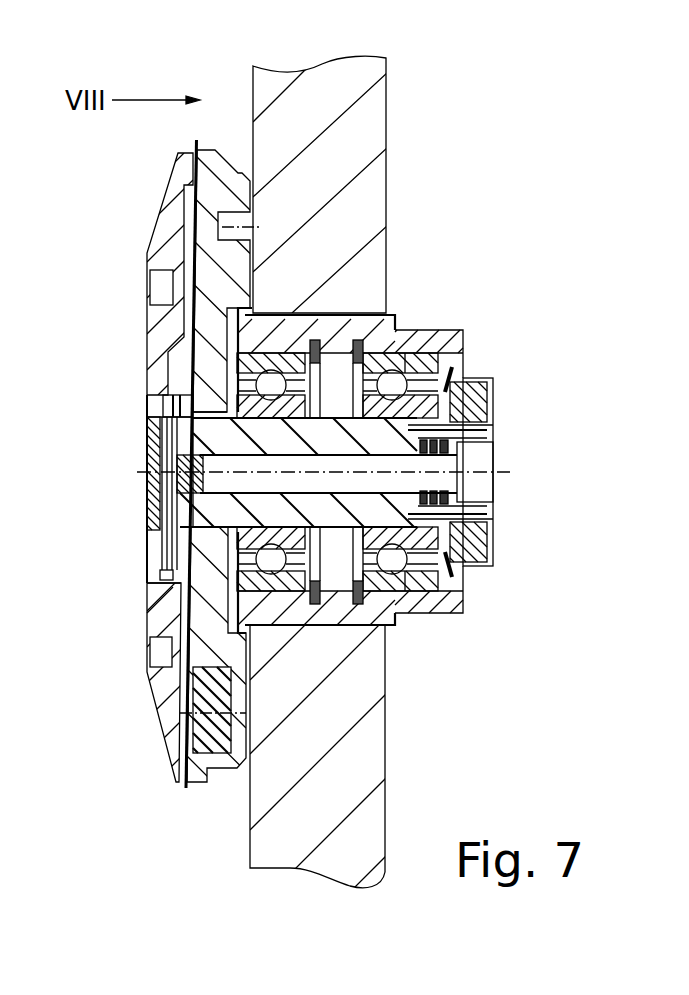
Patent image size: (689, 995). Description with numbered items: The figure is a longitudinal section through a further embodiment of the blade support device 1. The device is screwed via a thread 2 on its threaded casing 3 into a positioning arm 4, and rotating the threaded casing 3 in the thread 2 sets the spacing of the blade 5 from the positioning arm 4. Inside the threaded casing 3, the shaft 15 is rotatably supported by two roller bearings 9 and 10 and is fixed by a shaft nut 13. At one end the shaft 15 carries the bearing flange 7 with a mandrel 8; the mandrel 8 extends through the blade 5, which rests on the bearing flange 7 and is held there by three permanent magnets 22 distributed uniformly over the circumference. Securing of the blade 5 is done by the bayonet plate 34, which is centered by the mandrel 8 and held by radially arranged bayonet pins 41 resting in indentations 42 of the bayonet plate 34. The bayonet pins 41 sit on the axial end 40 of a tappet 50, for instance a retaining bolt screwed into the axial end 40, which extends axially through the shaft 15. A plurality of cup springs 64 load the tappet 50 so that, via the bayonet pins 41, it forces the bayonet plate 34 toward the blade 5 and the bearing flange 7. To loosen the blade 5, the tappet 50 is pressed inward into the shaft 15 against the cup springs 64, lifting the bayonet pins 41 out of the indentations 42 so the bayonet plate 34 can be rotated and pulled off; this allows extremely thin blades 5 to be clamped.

The blade support device 1 is at (588, 163).
The thread 2 is at (368, 303).
The threaded casing 3 is at (465, 332).
The positioning arm 4 is at (360, 146).
The blade 5 is at (186, 788).
The bearing flange 7 is at (216, 190).
The mandrel 8 is at (165, 398).
The roller bearing 9 is at (310, 345).
The roller bearing 10 is at (446, 338).
The shaft nut 13 is at (493, 395).
The shaft 15 is at (360, 500).
The permanent magnet 22 is at (192, 718).
The bayonet plate 34 is at (173, 217).
The axial end 40 is at (148, 513).
The bayonet pin 41 is at (165, 545).
The indentation 42 is at (165, 573).
The tappet 50 is at (440, 470).
The cup spring 64 is at (490, 540).